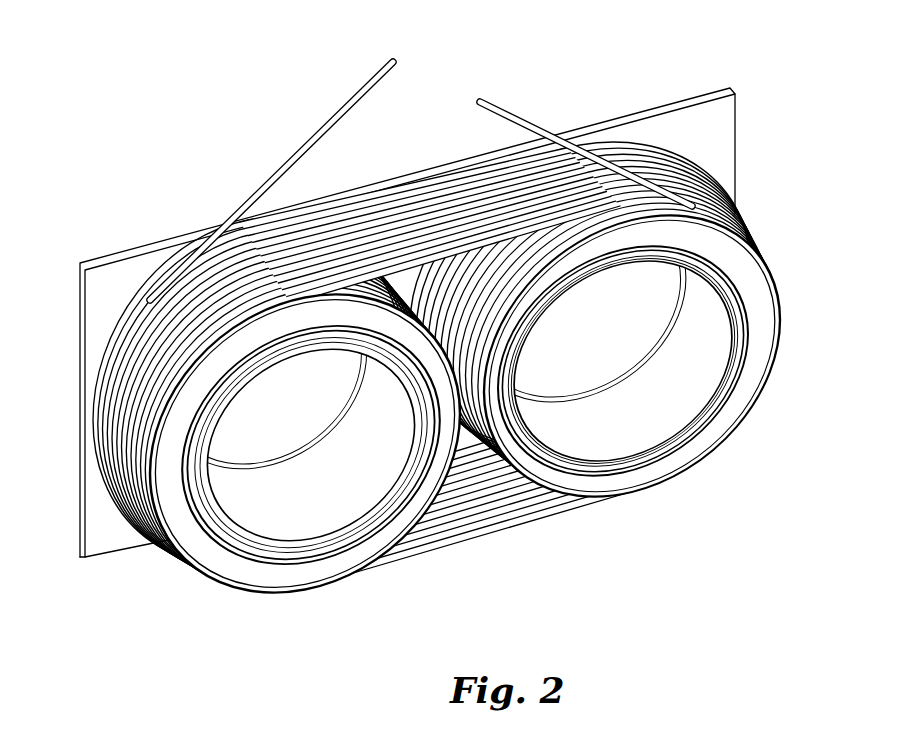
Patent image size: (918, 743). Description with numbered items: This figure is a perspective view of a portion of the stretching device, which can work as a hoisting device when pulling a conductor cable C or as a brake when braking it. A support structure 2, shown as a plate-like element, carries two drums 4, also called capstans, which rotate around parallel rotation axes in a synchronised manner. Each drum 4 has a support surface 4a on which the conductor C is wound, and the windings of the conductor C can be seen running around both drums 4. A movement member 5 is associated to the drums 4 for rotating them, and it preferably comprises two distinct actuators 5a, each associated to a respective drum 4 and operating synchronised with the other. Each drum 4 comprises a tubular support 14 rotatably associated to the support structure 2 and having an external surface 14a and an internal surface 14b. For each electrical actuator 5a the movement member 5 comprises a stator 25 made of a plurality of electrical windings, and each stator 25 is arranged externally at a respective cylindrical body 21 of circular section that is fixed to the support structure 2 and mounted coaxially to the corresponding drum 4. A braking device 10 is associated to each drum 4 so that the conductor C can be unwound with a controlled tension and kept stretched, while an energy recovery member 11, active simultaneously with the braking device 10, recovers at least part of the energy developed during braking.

The support structure 2 is at (110, 290).
The drum 4 is at (780, 295).
The support surface 4a is at (362, 287).
The movement member 5 is at (737, 428).
The actuator 5a is at (582, 483).
The braking device 10 is at (462, 438).
The energy recovery member 11 is at (760, 400).
The tubular support 14 is at (702, 465).
The external surface 14a is at (387, 283).
The internal surface 14b is at (762, 314).
The cylindrical body 21 is at (634, 456).
The stator 25 is at (727, 288).
The conductor cable C is at (463, 339).